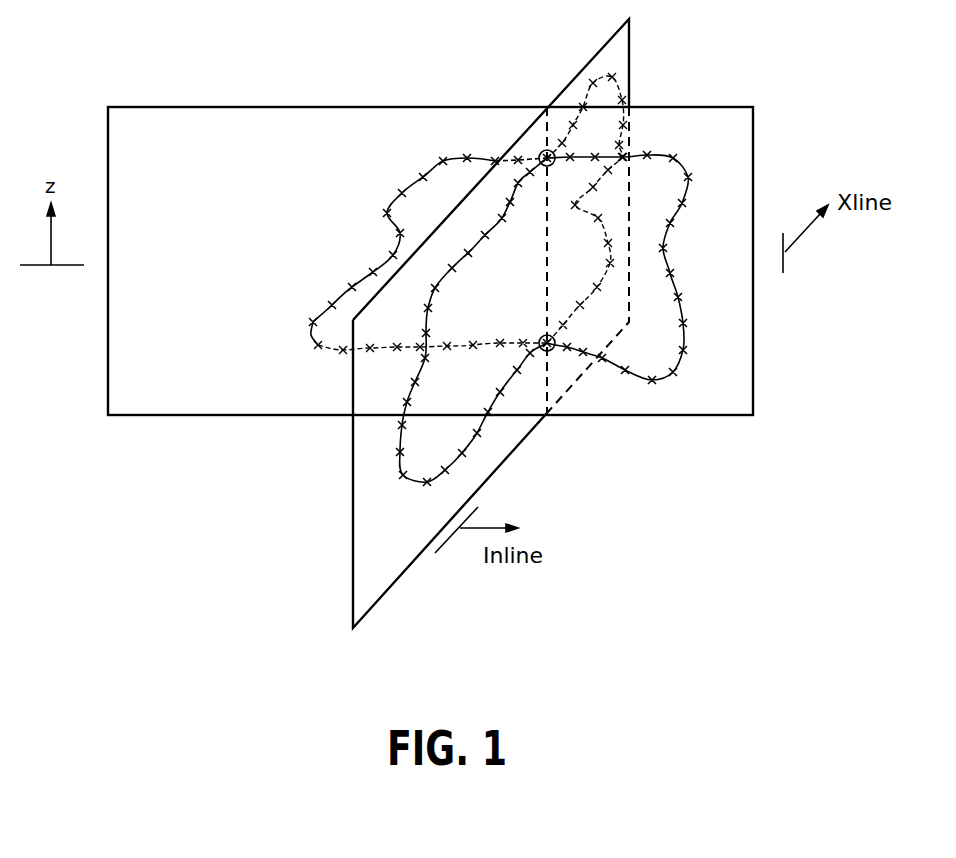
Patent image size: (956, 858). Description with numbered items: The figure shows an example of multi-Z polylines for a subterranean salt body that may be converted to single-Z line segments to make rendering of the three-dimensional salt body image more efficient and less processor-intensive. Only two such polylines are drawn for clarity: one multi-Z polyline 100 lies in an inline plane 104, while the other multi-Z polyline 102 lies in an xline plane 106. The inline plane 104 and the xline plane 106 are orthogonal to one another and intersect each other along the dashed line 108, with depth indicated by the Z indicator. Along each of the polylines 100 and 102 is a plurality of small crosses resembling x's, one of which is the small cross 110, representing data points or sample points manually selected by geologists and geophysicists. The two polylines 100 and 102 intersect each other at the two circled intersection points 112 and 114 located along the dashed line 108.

The multi-Z polyline 100 is at (413, 186).
The multi-Z polyline 102 is at (435, 482).
The inline plane 104 is at (692, 402).
The xline plane 106 is at (623, 50).
The dashed line 108 is at (547, 308).
The small cross 110 is at (318, 347).
The circled intersection point 112 is at (547, 150).
The circled intersection point 114 is at (555, 353).